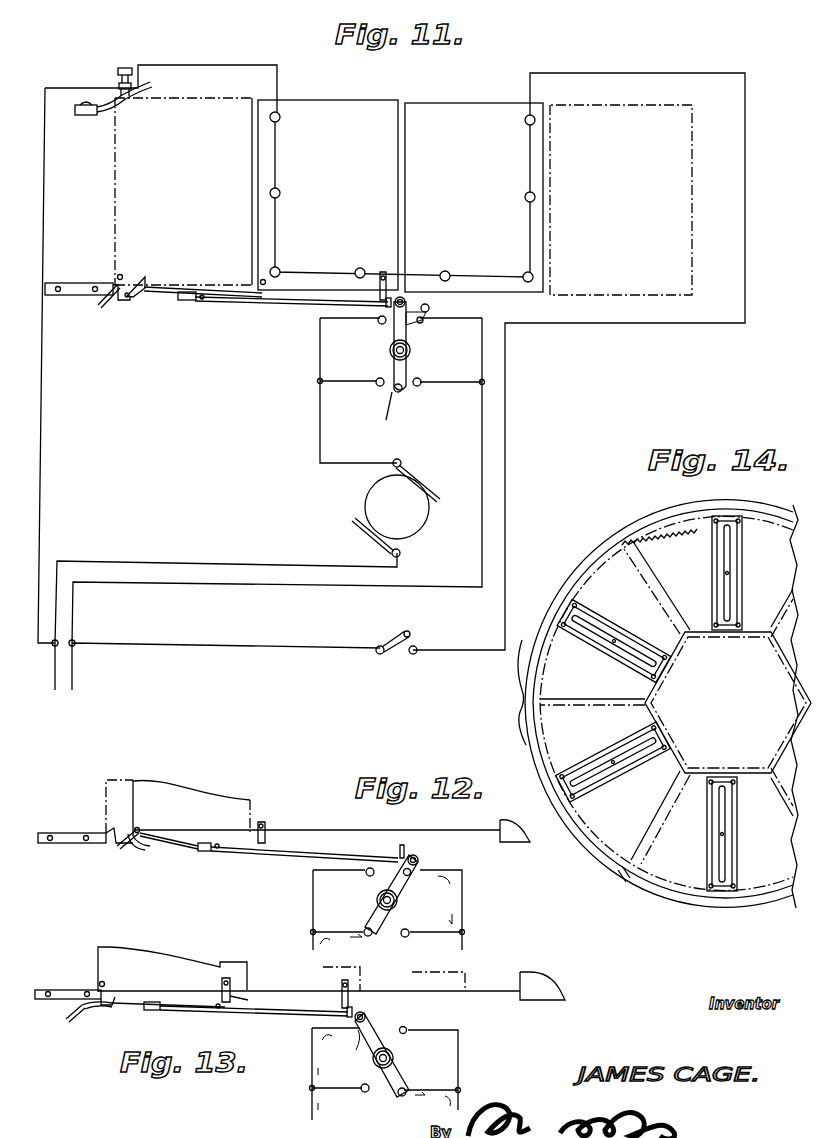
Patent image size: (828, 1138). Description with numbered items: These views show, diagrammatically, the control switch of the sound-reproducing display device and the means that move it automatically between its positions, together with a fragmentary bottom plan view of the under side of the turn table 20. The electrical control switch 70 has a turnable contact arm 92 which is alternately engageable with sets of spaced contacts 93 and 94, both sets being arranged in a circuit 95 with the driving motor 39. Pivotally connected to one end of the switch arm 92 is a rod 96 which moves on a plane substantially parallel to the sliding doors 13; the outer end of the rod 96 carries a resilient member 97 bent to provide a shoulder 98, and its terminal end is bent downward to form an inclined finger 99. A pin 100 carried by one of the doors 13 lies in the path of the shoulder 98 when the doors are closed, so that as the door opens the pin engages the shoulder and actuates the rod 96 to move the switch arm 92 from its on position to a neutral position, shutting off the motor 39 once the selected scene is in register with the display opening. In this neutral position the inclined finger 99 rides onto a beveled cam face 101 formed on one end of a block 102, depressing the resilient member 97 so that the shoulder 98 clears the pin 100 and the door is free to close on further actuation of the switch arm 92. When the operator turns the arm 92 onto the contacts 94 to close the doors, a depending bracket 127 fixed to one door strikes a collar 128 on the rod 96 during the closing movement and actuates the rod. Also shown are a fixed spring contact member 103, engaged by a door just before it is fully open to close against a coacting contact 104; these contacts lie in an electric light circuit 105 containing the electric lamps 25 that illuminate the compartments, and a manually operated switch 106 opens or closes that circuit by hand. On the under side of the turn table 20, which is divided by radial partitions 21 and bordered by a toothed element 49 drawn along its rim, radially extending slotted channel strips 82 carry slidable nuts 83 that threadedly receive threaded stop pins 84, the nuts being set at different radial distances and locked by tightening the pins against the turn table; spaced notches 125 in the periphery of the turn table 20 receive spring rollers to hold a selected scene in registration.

In FIG. 11, the doors 13 is at (403, 196).
In FIG. 12, the doors 13 is at (190, 786).
In FIG. 13, the doors 13 is at (165, 967).
In FIG. 14, the turn table 20 is at (683, 907).
In FIG. 14, the partitions 21 is at (645, 843).
In FIG. 11, the electric lamps 25 is at (281, 193).
In FIG. 11, the driving motor 39 is at (396, 508).
In FIG. 14, the ring gear 49 is at (695, 525).
In FIG. 11, the electrical control switch 70 is at (382, 417).
In FIG. 14, the slotted channel strips 82 is at (574, 606).
In FIG. 14, the nuts 83 is at (613, 632).
In FIG. 14, the threaded stop pins 84 is at (730, 588).
In FIG. 11, the contact arm 92 is at (408, 332).
In FIG. 12, the contact arm 92 is at (403, 888).
In FIG. 13, the contact arm 92 is at (395, 1043).
In FIG. 11, the contacts 93 is at (423, 320).
In FIG. 12, the contacts 93 is at (412, 872).
In FIG. 13, the contacts 93 is at (406, 1027).
In FIG. 11, the contacts 94 is at (378, 324).
In FIG. 12, the contacts 94 is at (402, 936).
In FIG. 13, the contacts 94 is at (366, 1016).
In FIG. 11, the circuit 95 is at (320, 449).
In FIG. 12, the circuit 95 is at (313, 904).
In FIG. 13, the circuit 95 is at (312, 1098).
In FIG. 11, the rod 96 is at (286, 303).
In FIG. 12, the rod 96 is at (275, 855).
In FIG. 13, the rod 96 is at (254, 1011).
In FIG. 11, the resilient member 97 is at (166, 299).
In FIG. 12, the resilient member 97 is at (202, 850).
In FIG. 13, the resilient member 97 is at (130, 1007).
In FIG. 11, the shoulder 98 is at (148, 281).
In FIG. 12, the shoulder 98 is at (145, 846).
In FIG. 13, the shoulder 98 is at (84, 1010).
In FIG. 11, the inclined finger 99 is at (106, 304).
In FIG. 12, the inclined finger 99 is at (125, 848).
In FIG. 13, the inclined finger 99 is at (64, 1020).
In FIG. 11, the pin 100 is at (123, 275).
In FIG. 12, the pin 100 is at (141, 830).
In FIG. 13, the pin 100 is at (106, 983).
In FIG. 11, the beveled cam face 101 is at (112, 288).
In FIG. 12, the beveled cam face 101 is at (108, 844).
In FIG. 13, the beveled cam face 101 is at (106, 1006).
In FIG. 11, the block 102 is at (78, 292).
In FIG. 12, the block 102 is at (58, 840).
In FIG. 13, the block 102 is at (58, 990).
In FIG. 11, the spring contact member 103 is at (110, 108).
In FIG. 11, the coacting contact 104 is at (118, 82).
In FIG. 11, the electric light circuit 105 is at (41, 441).
In FIG. 11, the manually operated switch 106 is at (393, 657).
In FIG. 14, the notches 125 is at (627, 875).
In FIG. 12, the depending bracket 127 is at (267, 836).
In FIG. 13, the depending bracket 127 is at (222, 1005).
In FIG. 12, the collar 128 is at (403, 846).
In FIG. 13, the collar 128 is at (350, 1016).